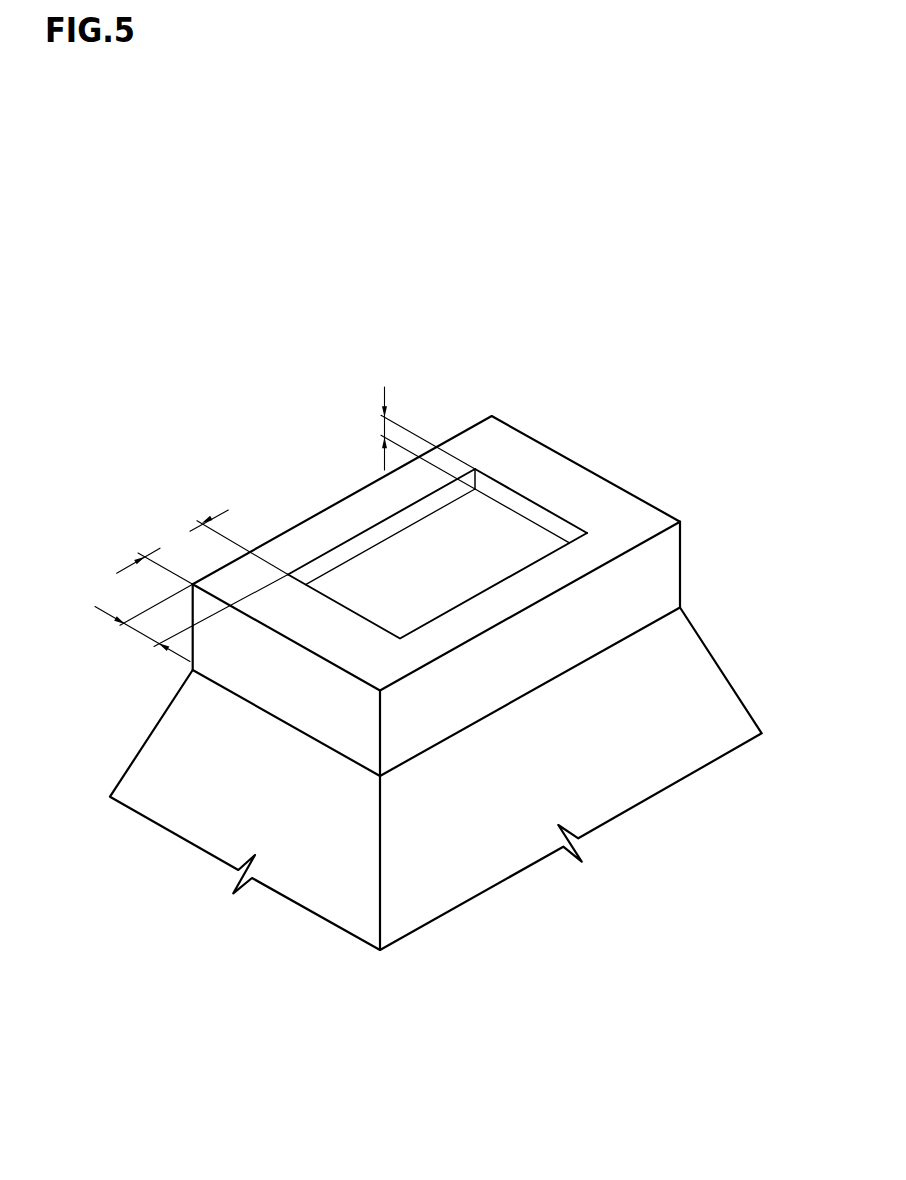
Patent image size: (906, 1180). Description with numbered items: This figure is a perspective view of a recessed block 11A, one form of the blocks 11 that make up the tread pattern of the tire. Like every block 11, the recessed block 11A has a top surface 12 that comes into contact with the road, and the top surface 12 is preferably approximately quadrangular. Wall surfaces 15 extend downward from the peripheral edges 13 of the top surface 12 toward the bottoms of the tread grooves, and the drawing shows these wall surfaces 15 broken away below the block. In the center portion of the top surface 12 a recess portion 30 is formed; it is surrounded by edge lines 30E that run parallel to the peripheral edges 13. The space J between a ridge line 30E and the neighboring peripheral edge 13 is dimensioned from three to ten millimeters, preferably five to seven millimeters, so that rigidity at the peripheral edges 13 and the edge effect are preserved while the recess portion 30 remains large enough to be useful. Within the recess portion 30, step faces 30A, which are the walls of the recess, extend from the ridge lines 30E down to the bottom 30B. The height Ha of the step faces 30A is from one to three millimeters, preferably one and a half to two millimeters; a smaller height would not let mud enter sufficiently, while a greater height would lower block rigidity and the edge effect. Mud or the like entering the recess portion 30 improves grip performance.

The block 11 is at (451, 619).
The recessed block 11A is at (462, 402).
The top surface 12 is at (627, 515).
The peripheral edge 13 is at (608, 565).
The wall surface 15 is at (687, 667).
The recess portion 30 is at (492, 540).
The step face 30A is at (355, 587).
The bottom 30B is at (375, 535).
The edge line 30E is at (542, 505).
The height of the step faces Ha is at (410, 438).
The space J is at (191, 586).